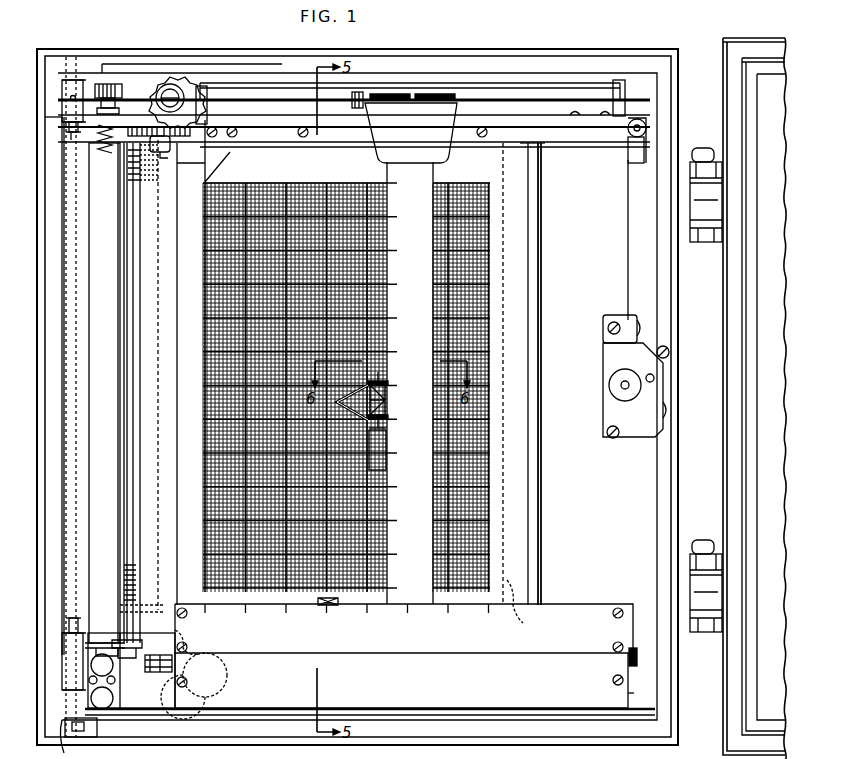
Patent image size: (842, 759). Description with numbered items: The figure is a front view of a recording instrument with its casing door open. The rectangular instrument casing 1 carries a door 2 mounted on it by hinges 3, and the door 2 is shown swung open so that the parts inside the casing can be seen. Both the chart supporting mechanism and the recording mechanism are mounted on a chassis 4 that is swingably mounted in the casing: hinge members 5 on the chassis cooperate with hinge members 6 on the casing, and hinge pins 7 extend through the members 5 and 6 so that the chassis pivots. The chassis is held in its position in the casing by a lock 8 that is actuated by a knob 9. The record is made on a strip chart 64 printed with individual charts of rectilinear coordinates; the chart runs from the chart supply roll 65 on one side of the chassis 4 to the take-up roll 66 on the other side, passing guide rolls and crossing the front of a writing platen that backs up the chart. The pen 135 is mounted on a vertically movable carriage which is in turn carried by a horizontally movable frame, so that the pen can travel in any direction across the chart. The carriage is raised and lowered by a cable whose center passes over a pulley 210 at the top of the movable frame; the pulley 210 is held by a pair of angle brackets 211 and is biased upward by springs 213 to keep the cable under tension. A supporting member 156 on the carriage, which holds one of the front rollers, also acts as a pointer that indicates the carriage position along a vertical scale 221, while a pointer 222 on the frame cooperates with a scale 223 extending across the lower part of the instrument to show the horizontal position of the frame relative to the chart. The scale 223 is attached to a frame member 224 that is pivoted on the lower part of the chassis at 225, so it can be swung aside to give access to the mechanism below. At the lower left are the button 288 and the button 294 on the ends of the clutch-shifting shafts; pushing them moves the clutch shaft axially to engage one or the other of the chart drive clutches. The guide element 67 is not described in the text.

The instrument casing 1 is at (579, 54).
The door 2 is at (723, 66).
The hinges 3 is at (706, 150).
The chassis 4 is at (618, 238).
The hinge members 5 is at (63, 98).
The hinge members 6 is at (56, 62).
The hinge pins 7 is at (73, 136).
The lock 8 is at (603, 342).
The knob 9 is at (622, 396).
The chart 64 is at (354, 131).
The chart supply roll 65 is at (555, 528).
The take-up roll 66 is at (100, 245).
The chart guide 67 is at (521, 388).
The pen 135 is at (342, 425).
The supporting member 156 is at (387, 392).
The pulley 210 is at (407, 103).
The angle brackets 211 is at (433, 92).
The springs 213 is at (454, 94).
The scale 221 is at (428, 174).
The pointer 222 is at (317, 606).
The scale 223 is at (382, 644).
The frame member 224 is at (574, 696).
The pivot 225 is at (634, 690).
The button 288 is at (110, 669).
The button 294 is at (114, 697).